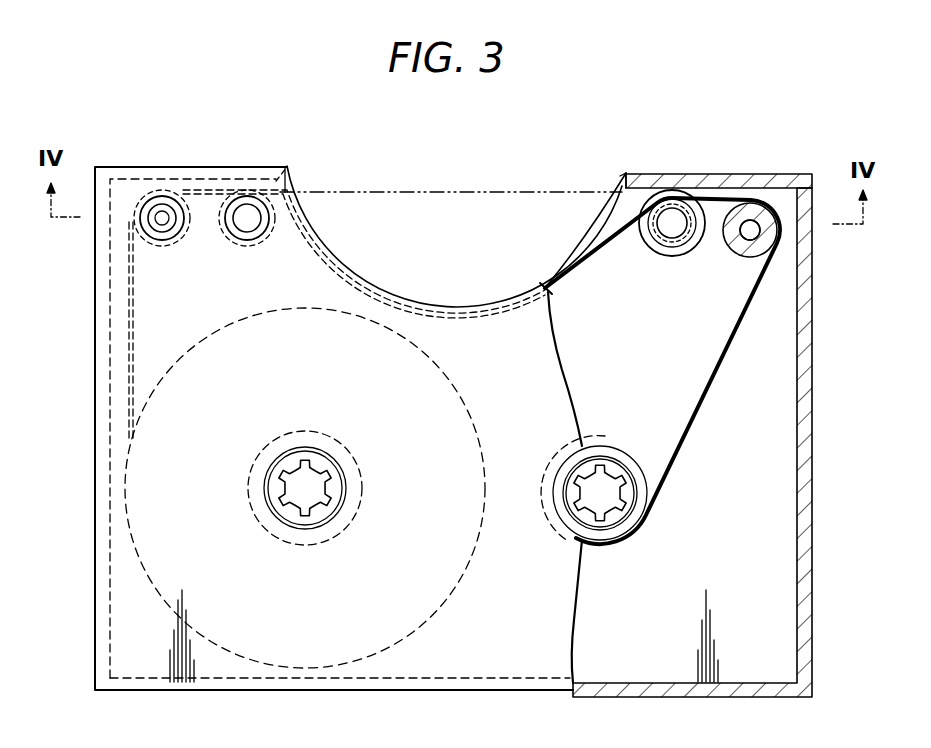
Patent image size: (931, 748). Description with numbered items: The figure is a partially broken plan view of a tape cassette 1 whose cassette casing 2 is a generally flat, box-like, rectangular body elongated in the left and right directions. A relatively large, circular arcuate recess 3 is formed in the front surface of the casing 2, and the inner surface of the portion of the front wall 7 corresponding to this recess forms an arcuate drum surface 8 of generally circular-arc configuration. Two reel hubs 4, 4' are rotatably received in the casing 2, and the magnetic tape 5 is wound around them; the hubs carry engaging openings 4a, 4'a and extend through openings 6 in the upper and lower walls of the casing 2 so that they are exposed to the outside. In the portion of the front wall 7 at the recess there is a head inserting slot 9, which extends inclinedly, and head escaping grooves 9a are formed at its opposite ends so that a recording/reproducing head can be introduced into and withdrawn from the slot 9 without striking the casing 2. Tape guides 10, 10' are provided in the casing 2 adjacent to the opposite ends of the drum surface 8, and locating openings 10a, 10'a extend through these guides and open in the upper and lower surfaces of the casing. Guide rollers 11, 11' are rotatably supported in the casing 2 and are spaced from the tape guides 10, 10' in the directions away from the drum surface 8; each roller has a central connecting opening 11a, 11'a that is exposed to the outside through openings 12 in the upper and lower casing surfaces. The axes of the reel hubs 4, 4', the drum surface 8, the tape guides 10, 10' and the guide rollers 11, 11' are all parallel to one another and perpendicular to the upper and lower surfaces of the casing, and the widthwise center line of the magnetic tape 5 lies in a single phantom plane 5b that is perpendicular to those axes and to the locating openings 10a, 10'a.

The tape cassette 1 is at (257, 105).
The cassette casing 2 is at (812, 365).
The circular arcuate recess 3 is at (380, 286).
The reel hub 4 is at (305, 458).
The engaging opening 4a is at (308, 512).
The reel hub 4' is at (600, 465).
The engaging opening 4'a is at (606, 533).
The magnetic tape 5 is at (128, 320).
The phantom plane 5b is at (412, 190).
The opening 6 is at (283, 460).
The front wall 7 is at (688, 173).
The arcuate drum surface 8 is at (565, 282).
The head inserting slot 9 is at (555, 276).
The head escaping groove 9a is at (277, 181).
The tape guide 10 is at (272, 249).
The locating opening 10a is at (248, 228).
The tape guide 10' is at (670, 261).
The locating opening 10'a is at (652, 242).
The guide roller 11 is at (197, 169).
The connecting opening 11a is at (163, 232).
The guide roller 11' is at (769, 174).
The connecting opening 11'a is at (736, 253).
The opening 12 is at (162, 226).